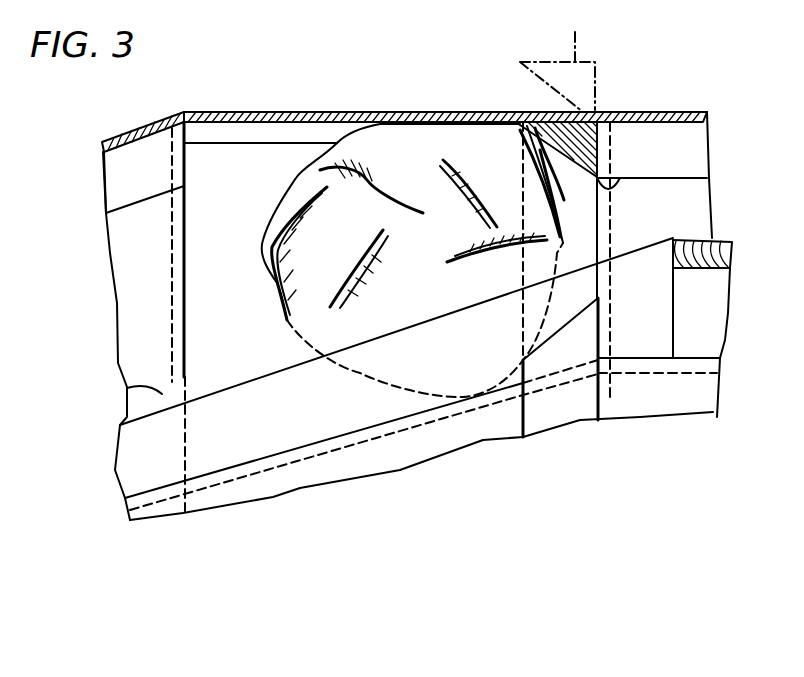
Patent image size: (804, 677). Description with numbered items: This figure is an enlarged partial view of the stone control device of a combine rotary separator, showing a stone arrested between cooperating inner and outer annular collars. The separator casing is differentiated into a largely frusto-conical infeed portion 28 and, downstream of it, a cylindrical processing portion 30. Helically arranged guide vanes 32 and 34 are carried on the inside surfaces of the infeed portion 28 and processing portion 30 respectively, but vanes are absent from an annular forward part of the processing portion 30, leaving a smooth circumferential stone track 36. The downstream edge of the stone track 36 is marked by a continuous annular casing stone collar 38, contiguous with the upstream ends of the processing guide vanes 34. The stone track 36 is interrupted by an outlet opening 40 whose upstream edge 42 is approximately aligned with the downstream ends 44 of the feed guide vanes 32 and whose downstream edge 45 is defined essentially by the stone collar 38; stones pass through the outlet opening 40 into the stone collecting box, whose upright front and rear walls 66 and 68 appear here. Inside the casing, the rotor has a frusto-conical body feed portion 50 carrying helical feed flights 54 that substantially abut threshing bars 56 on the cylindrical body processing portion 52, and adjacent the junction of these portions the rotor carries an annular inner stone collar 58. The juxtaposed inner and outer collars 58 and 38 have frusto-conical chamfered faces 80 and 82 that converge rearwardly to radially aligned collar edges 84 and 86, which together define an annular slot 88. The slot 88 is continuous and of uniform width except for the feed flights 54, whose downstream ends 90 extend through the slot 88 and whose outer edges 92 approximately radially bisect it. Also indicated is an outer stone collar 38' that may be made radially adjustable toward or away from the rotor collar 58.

The infeed portion 28 is at (141, 125).
The processing portion 30 is at (686, 112).
The feed guide vanes 32 is at (132, 182).
The processing guide vanes 34 is at (695, 164).
The stone track 36 is at (227, 135).
The casing stone collar 38 is at (578, 87).
The radially adjustable outer stone collar 38' is at (599, 38).
The outlet opening 40 is at (250, 320).
The upstream edge 42 is at (186, 249).
The downstream ends 44 is at (185, 171).
The downstream edge 45 is at (522, 270).
The rotor body feed portion 50 is at (273, 455).
The rotor body processing portion 52 is at (663, 367).
The feed flights 54 is at (127, 388).
The threshing bars 56 is at (717, 299).
The inner stone collar 58 is at (560, 407).
The front wall 66 is at (171, 287).
The rear wall 68 is at (611, 400).
The chamfered face of inner collar 80 is at (556, 333).
The chamfered face of outer collar 82 is at (575, 160).
The inner collar edge 84 is at (598, 298).
The outer collar edge 86 is at (623, 180).
The annular slot 88 is at (593, 274).
The downstream ends of feed flights 90 is at (662, 342).
The outer edges of feed flights 92 is at (630, 230).